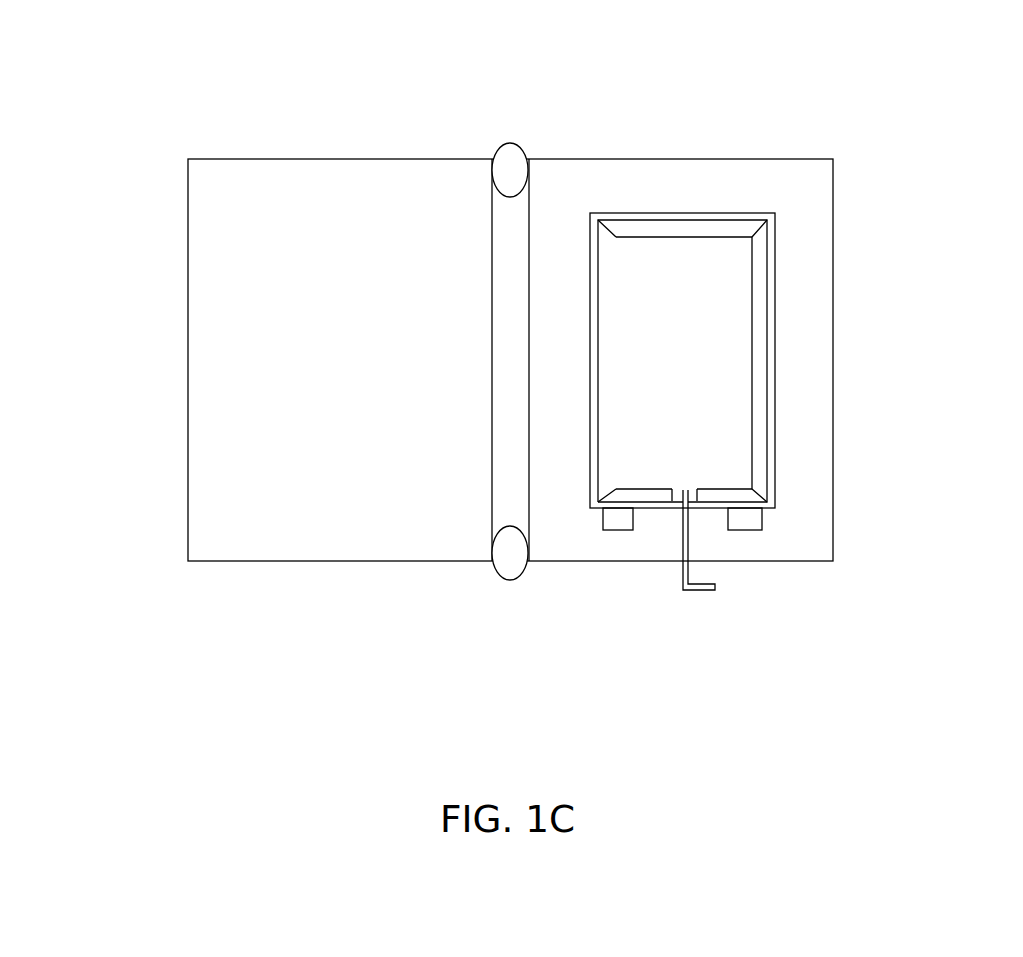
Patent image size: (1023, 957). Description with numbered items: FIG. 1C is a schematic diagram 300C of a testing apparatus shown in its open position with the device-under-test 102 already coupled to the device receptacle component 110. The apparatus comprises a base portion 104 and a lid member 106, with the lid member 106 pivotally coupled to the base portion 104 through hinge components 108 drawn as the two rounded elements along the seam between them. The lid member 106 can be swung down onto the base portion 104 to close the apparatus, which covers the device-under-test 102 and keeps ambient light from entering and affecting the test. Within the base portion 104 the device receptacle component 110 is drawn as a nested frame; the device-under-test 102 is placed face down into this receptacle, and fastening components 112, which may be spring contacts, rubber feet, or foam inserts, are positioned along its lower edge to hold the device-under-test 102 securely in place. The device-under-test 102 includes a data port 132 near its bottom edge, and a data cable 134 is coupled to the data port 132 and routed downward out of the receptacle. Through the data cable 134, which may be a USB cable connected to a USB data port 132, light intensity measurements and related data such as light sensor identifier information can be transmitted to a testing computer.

The testing apparatus configuration 300C is at (926, 51).
The device-under-test 102 is at (963, 366).
The base portion 104 is at (998, 116).
The lid member 106 is at (268, 197).
The hinge component 108 is at (502, 145).
The device receptacle component 110 is at (601, 213).
The fastening component 112 is at (617, 520).
The data port 132 is at (672, 493).
The data cable 134 is at (705, 592).